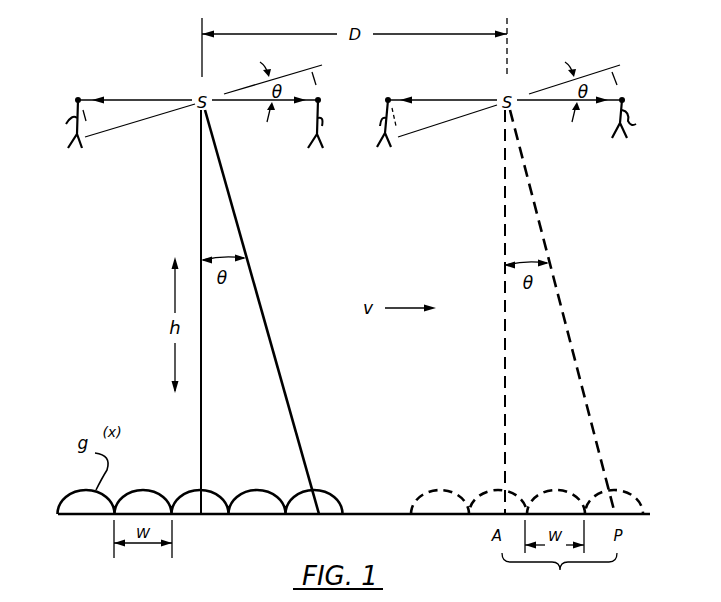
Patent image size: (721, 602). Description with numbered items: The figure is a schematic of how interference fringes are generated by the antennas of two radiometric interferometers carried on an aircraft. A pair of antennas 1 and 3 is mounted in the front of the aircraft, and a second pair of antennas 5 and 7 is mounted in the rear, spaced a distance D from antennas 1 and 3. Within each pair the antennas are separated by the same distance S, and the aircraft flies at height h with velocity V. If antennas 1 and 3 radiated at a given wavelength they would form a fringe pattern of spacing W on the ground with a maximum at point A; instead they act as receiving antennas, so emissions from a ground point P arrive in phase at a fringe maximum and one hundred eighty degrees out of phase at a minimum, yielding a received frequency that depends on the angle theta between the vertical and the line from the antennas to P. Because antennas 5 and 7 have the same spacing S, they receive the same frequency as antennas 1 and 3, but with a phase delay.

The antenna 1 is at (640, 131).
The antenna 3 is at (389, 123).
The antenna 5 is at (321, 119).
The antenna 7 is at (66, 123).